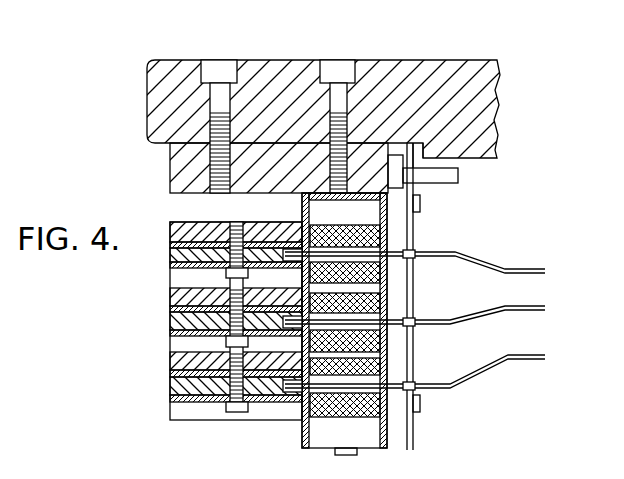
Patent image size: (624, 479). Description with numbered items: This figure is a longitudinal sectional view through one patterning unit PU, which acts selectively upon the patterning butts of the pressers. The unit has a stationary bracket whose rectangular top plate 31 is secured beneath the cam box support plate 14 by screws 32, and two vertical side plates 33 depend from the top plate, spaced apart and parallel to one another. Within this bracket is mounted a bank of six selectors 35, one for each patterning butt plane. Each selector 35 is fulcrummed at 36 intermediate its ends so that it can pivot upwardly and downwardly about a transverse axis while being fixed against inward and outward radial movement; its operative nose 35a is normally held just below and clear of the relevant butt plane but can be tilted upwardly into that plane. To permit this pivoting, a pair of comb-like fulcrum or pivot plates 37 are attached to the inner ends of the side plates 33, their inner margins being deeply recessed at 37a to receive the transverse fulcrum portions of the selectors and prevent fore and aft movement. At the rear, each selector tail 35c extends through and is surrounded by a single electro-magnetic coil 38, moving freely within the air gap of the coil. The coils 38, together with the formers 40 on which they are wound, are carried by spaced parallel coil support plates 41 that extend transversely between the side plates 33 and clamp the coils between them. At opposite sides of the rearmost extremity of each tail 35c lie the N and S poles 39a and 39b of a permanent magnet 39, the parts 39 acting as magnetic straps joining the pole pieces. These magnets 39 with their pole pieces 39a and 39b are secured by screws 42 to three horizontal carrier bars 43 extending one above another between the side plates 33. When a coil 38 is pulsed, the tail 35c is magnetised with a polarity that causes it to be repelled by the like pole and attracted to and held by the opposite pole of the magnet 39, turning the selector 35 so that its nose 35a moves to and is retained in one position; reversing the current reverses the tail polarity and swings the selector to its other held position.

The cam box support plate 14 is at (171, 62).
The top plate 31 is at (184, 156).
The screws 32 is at (336, 95).
The side plates 33 is at (191, 420).
The selectors 35 is at (477, 262).
The operative nose 35a is at (519, 268).
The selector tail 35c is at (330, 245).
The fulcrum 36 is at (413, 254).
The fulcrum or pivot plates 37 is at (426, 160).
The recesses 37a is at (416, 250).
The electro-magnetic coil 38 is at (354, 245).
The permanent magnet 39 is at (178, 255).
The N pole piece 39a is at (296, 246).
The S pole piece 39b is at (272, 247).
The formers 40 is at (418, 204).
The coil support plates 41 is at (305, 196).
The screws 42 is at (226, 273).
The carrier bars 43 is at (176, 230).
The north pole N is at (172, 245).
The south pole S is at (178, 266).
The patterning unit PU is at (164, 421).